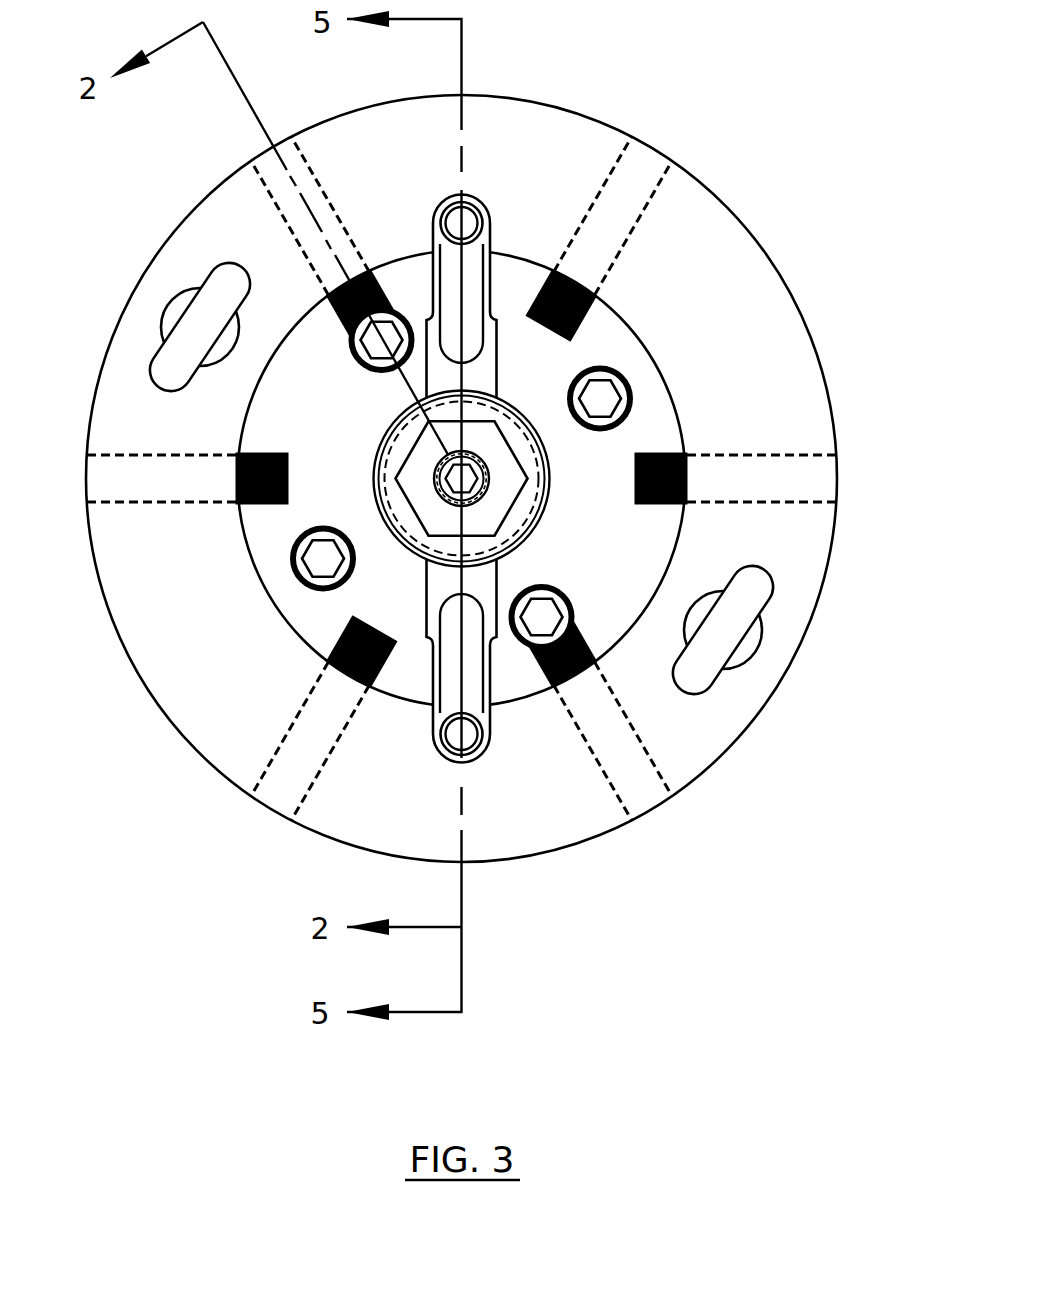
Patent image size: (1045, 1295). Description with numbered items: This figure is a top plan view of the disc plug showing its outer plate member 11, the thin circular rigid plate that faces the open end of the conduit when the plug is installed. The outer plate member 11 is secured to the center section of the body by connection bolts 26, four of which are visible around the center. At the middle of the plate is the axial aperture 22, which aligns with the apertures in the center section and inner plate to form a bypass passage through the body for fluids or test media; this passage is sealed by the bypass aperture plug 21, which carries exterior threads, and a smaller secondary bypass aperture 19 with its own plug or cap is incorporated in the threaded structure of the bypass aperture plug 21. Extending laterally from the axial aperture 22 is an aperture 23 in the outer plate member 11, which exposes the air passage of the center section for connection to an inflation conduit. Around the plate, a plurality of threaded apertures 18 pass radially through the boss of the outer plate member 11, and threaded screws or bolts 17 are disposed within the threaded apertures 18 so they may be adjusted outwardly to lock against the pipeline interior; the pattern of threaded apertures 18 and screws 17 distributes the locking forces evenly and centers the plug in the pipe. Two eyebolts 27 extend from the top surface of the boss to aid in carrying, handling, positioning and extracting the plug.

The outer plate member 11 is at (584, 883).
The threaded screws or bolts 17 is at (637, 495).
The threaded apertures 18 is at (650, 200).
The secondary bypass aperture 19 is at (440, 497).
The bypass aperture plug 21 is at (498, 467).
The axial aperture 22 is at (393, 423).
The aperture 23 is at (450, 585).
The connection bolts 26 is at (574, 394).
The eyebolts 27 is at (203, 277).